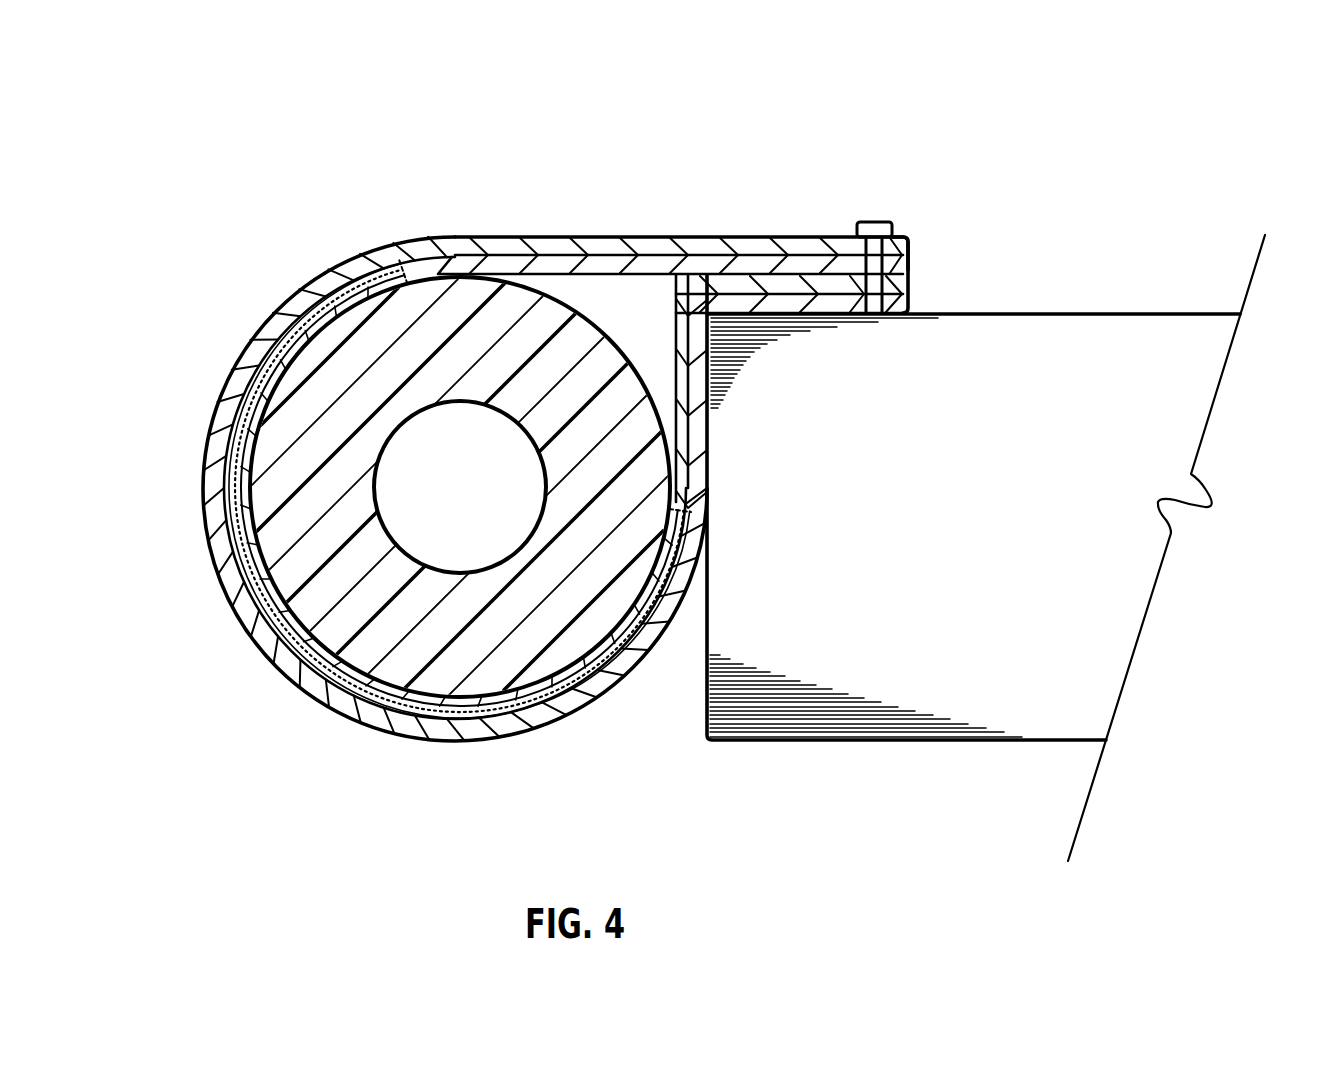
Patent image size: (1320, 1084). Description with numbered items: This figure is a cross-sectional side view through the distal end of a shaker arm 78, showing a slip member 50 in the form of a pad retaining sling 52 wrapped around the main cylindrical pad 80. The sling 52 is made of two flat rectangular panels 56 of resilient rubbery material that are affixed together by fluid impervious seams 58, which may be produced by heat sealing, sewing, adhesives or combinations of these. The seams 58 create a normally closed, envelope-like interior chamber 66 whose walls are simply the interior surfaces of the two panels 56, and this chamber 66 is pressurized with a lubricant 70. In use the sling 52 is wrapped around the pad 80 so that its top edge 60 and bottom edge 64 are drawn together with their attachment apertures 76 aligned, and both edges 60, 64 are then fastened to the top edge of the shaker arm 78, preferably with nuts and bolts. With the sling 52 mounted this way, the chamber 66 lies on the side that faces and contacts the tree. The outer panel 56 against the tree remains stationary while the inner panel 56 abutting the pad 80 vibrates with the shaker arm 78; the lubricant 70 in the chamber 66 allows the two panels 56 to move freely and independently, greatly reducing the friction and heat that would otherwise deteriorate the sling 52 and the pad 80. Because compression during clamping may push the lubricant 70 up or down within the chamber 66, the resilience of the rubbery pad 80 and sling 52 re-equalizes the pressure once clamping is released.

The slip member 50 is at (668, 235).
The pad retaining sling 52 is at (200, 488).
The flat rectangular panels 56 is at (563, 700).
The fluid impervious seams 58 is at (392, 246).
The top edge 60 is at (905, 250).
The bottom edge 64 is at (905, 295).
The interior chamber 66 is at (237, 580).
The lubricant 70 is at (262, 362).
The attachment apertures 76 is at (887, 229).
The shaker arm 78 is at (938, 700).
The cylindrical pad 80 is at (365, 645).